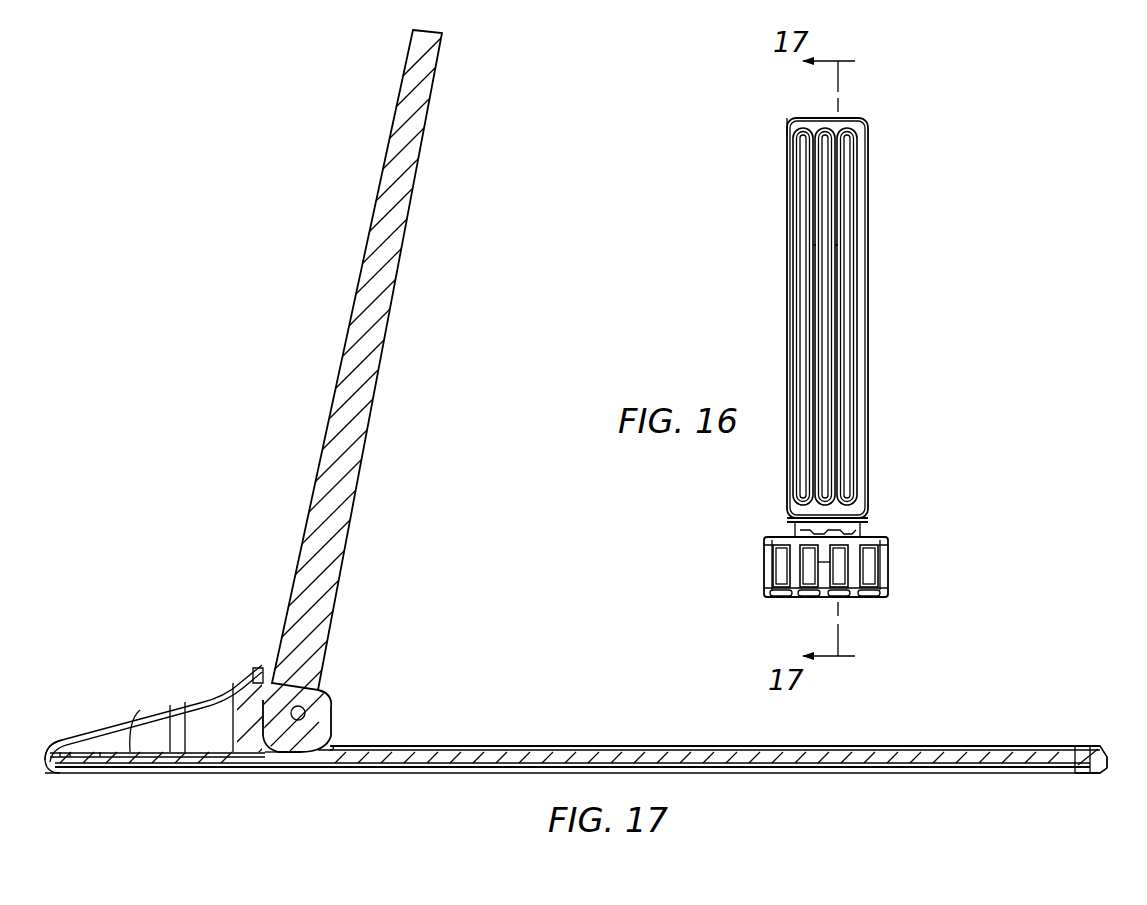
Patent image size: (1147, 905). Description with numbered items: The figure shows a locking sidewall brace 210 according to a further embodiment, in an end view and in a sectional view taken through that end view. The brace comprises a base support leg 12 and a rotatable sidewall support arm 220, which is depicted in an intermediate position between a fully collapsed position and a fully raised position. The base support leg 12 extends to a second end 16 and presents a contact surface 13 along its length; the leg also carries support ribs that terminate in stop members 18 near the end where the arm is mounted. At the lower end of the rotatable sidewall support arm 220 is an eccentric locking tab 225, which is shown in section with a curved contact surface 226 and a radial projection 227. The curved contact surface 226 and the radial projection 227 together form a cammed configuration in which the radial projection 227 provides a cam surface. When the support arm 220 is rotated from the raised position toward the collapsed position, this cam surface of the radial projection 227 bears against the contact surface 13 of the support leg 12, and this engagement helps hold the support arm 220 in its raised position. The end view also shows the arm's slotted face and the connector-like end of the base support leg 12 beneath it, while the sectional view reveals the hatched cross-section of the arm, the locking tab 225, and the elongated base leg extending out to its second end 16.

In FIG. 17, the base support leg 12 is at (862, 760).
In FIG. 16, the base support leg 12 is at (887, 566).
In FIG. 17, the contact surface 13 is at (272, 750).
In FIG. 17, the second end 16 is at (1107, 755).
In FIG. 17, the stop members 18 is at (262, 660).
In FIG. 17, the locking sidewall brace 210 is at (248, 393).
In FIG. 16, the locking sidewall brace 210 is at (738, 292).
In FIG. 17, the rotatable sidewall support arm 220 is at (398, 272).
In FIG. 16, the rotatable sidewall support arm 220 is at (858, 274).
In FIG. 17, the eccentric locking tab 225 is at (325, 718).
In FIG. 17, the curved contact surface 226 is at (332, 757).
In FIG. 17, the radial projection 227 is at (278, 755).